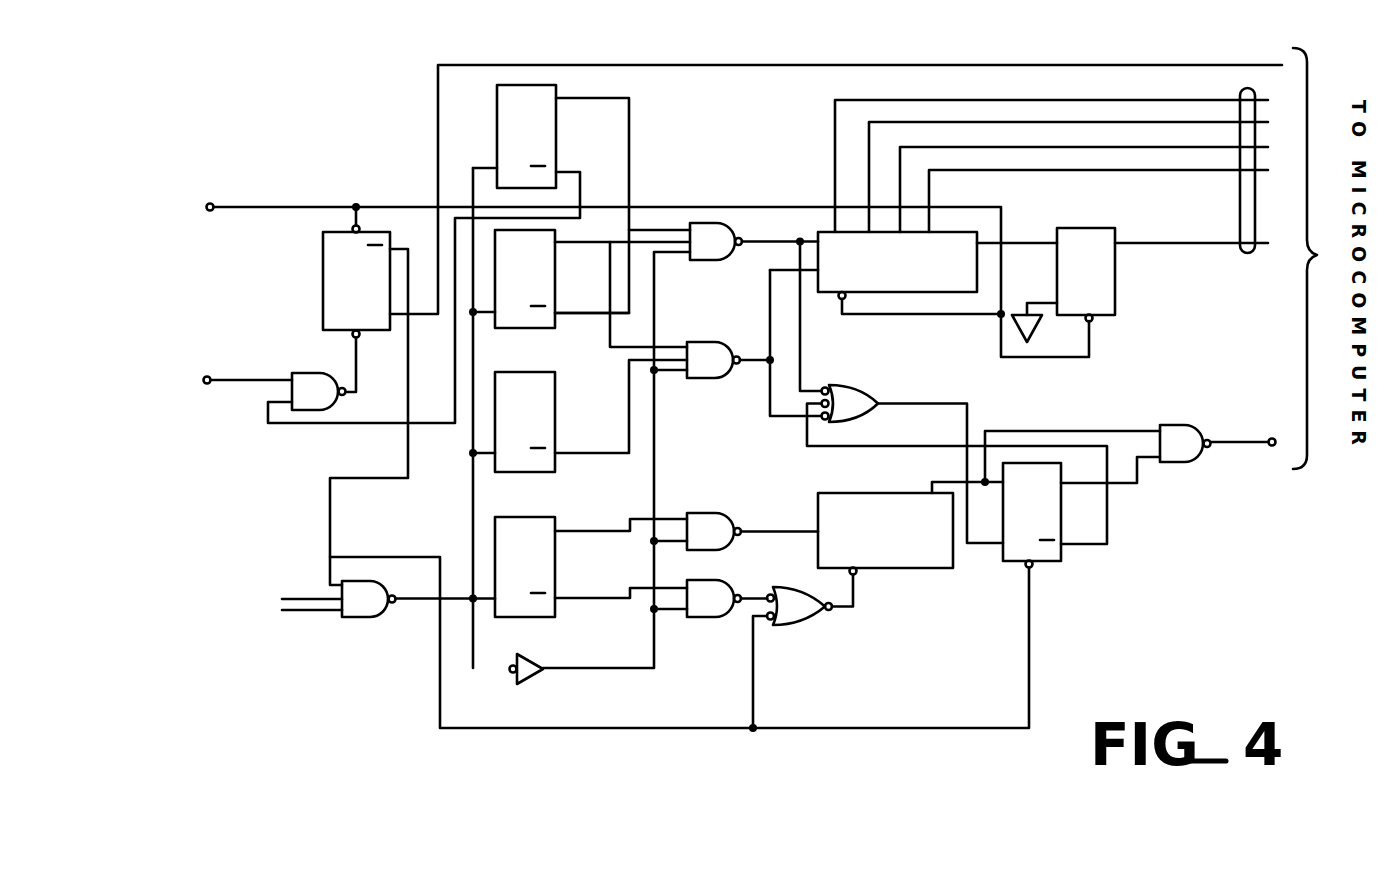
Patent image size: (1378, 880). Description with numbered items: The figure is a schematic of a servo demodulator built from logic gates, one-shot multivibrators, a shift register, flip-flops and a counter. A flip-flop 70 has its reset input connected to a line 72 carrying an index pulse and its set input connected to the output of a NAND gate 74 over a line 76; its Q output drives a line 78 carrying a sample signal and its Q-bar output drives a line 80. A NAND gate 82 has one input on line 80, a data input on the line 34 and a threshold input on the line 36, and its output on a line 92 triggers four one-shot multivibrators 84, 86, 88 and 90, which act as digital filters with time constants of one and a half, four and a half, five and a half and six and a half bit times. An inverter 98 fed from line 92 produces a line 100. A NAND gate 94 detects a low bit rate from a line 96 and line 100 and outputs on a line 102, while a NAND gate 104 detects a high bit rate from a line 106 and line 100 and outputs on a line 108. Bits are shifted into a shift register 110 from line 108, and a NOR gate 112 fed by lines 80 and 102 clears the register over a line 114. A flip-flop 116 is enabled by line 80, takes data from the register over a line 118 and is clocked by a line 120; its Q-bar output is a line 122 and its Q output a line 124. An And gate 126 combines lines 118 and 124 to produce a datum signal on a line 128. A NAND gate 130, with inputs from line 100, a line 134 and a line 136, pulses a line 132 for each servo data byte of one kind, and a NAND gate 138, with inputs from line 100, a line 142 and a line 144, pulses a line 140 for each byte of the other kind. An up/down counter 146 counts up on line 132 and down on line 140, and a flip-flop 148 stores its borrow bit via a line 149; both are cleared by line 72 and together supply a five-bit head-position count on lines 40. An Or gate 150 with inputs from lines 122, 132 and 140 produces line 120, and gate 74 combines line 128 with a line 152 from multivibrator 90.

The line 34 is at (298, 598).
The line 36 is at (300, 612).
The lines 40 is at (1253, 92).
The flip-flop 70 is at (322, 293).
The line 72 is at (377, 203).
The NAND gate 74 is at (305, 371).
The line 76 is at (357, 350).
The line 78 is at (418, 316).
The line 80 is at (415, 257).
The NAND gate 82 is at (360, 619).
The one-shot multivibrator 84 is at (557, 548).
The one-shot multivibrator 86 is at (556, 392).
The one-shot multivibrator 88 is at (557, 257).
The one-shot multivibrator 90 is at (557, 113).
The line 92 is at (420, 602).
The NAND gate 94 is at (703, 619).
The line 96 is at (580, 599).
The inverter 98 is at (536, 673).
The line 100 is at (608, 670).
The line 102 is at (747, 596).
The NAND gate 104 is at (715, 511).
The line 106 is at (597, 527).
The line 108 is at (752, 530).
The 4-bit shift register 110 is at (870, 492).
The NOR gate 112 is at (800, 620).
The line 114 is at (856, 588).
The flip-flop 116 is at (1052, 566).
The line 118 is at (947, 481).
The line 120 is at (983, 548).
The line 122 is at (1108, 524).
The line 124 is at (1138, 471).
The And gate 126 is at (1190, 424).
The line 128 is at (240, 379).
The NAND gate 130 is at (702, 379).
The line 132 is at (752, 361).
The line 134 is at (577, 452).
The line 136 is at (573, 243).
The NAND gate 138 is at (710, 263).
The line 140 is at (757, 245).
The line 142 is at (562, 314).
The line 144 is at (631, 140).
The up/down counter 146 is at (826, 232).
The flip-flop 148 is at (1117, 267).
The line 149 is at (1027, 242).
The Or gate 150 is at (871, 387).
The line 152 is at (339, 425).